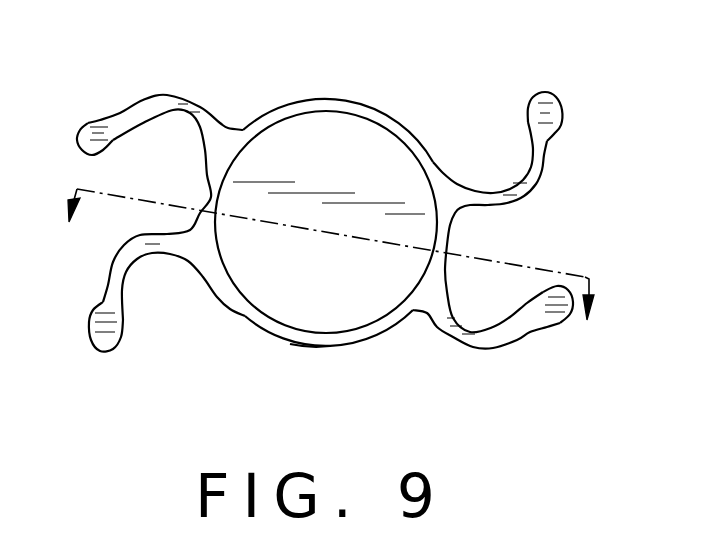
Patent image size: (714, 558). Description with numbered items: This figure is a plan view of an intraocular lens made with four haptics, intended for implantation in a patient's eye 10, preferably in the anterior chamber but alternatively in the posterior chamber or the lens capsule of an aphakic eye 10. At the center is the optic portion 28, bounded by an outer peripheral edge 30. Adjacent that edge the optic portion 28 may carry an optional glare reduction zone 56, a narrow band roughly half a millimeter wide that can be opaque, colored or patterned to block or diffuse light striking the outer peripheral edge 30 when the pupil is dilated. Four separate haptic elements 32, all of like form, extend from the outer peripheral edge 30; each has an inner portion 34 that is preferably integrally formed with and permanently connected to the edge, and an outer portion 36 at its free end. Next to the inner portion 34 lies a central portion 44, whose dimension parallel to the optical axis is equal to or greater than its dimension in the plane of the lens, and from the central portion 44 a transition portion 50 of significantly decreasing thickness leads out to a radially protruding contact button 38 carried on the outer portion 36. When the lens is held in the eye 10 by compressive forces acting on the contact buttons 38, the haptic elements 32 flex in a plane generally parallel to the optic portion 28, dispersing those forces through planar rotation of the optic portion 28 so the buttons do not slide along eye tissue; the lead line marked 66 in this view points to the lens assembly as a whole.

The eye 10 is at (332, 260).
The optic portion 28 is at (370, 143).
The outer peripheral edge 30 is at (340, 97).
The haptic element 32 is at (330, 221).
The inner portion 34 is at (228, 127).
The outer portion 36 is at (95, 150).
The contact button 38 is at (330, 224).
The central portion 44 is at (178, 93).
The transition portion 50 is at (113, 143).
The glare reduction zone 56 is at (307, 347).
The intraocular lens 66 is at (470, 70).